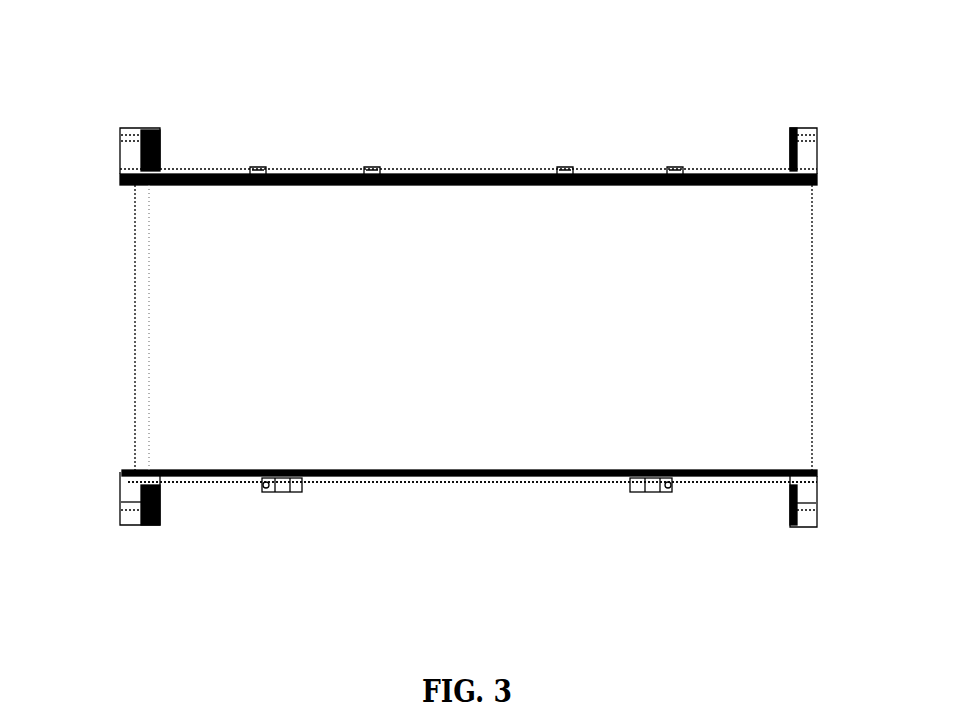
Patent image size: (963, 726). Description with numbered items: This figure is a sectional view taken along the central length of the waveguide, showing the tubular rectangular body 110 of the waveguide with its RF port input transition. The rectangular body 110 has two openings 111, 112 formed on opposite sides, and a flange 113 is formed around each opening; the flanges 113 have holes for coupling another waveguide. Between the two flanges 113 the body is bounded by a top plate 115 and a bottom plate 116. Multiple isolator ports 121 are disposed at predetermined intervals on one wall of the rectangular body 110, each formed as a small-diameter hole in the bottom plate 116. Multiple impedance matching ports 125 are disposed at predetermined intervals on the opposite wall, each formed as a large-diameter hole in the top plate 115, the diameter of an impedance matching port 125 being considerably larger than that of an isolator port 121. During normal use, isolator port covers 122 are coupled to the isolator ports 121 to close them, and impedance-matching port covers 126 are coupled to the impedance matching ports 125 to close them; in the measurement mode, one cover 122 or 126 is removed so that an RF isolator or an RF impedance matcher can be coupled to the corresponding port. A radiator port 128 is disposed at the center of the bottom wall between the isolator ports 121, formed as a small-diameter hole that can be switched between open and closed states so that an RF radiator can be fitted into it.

The tubular rectangular body 110 is at (466, 301).
The opening 111 is at (100, 240).
The opening 112 is at (830, 215).
The flange 113 is at (123, 128).
The top plate 115 is at (527, 168).
The bottom plate 116 is at (555, 480).
The isolator port 121 is at (290, 490).
The isolator port cover 122 is at (265, 492).
The impedance matching port 125 is at (257, 168).
The impedance-matching port cover 126 is at (305, 168).
The radiator port 128 is at (472, 478).